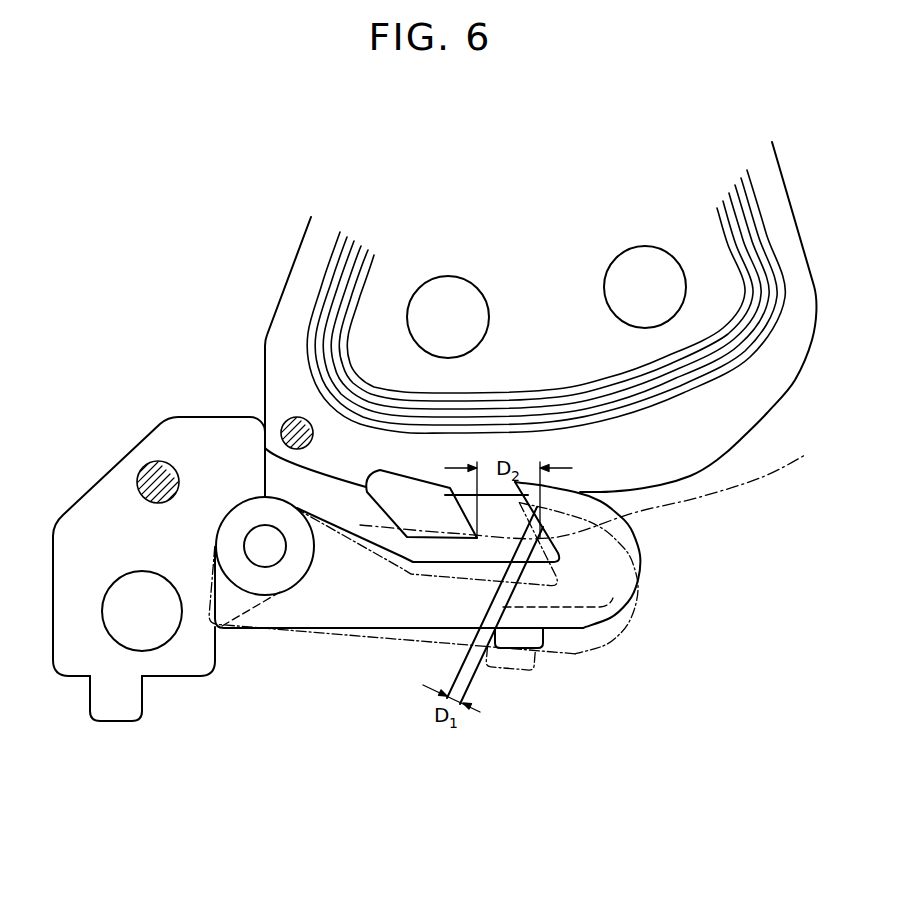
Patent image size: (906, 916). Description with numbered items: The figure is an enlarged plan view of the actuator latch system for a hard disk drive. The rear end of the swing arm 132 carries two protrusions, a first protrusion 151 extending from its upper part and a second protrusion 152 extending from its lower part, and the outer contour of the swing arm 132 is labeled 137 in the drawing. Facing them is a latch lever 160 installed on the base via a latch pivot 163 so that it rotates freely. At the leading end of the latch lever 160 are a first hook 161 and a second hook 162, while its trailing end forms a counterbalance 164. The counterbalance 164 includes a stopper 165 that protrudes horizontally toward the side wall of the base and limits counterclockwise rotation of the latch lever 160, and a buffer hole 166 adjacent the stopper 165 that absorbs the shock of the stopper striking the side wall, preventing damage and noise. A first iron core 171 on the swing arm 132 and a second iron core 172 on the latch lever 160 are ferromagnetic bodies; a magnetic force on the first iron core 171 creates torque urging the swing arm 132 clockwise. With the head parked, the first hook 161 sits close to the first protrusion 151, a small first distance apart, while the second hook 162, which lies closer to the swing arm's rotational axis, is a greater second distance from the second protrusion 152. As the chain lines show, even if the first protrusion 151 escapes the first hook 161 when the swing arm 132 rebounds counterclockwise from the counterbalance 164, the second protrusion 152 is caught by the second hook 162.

The swing arm 132 is at (735, 422).
The frame guide portion 137 is at (640, 407).
The first protrusion 151 is at (453, 547).
The second protrusion 152 is at (413, 490).
The latch lever 160 is at (352, 645).
The first hook 161 is at (520, 640).
The second hook 162 is at (557, 497).
The latch pivot 163 is at (267, 555).
The counterbalance 164 is at (87, 515).
The stopper 165 is at (115, 717).
The buffer hole 166 is at (157, 635).
The first iron core 171 is at (286, 423).
The second iron core 172 is at (148, 473).